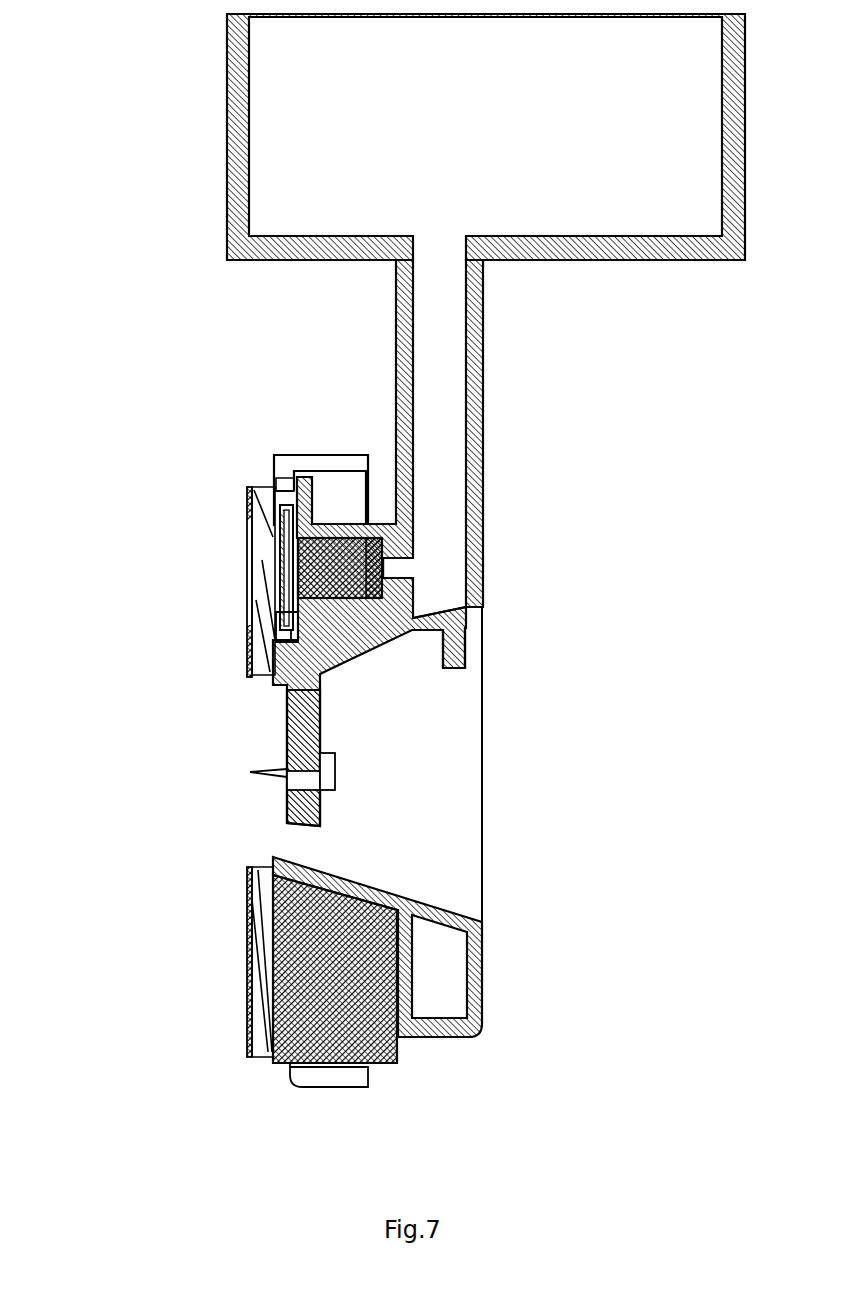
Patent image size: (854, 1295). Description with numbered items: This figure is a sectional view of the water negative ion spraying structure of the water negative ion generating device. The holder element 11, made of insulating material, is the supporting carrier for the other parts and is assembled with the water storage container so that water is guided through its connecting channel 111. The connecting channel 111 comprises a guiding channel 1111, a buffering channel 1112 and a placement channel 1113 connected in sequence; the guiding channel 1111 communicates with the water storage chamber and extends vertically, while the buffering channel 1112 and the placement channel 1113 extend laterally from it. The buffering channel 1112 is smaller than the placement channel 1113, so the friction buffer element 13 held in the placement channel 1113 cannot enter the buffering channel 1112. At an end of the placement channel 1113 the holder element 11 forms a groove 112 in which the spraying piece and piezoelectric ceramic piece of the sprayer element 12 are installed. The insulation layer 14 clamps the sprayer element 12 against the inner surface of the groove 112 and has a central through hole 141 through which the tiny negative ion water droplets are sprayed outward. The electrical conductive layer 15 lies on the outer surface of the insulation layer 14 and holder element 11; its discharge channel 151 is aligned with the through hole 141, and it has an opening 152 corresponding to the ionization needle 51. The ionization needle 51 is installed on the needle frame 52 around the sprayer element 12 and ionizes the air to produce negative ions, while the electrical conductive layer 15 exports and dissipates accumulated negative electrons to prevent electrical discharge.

The holder element 11 is at (323, 457).
The connecting channel 111 is at (440, 336).
The guiding channel 1111 is at (447, 431).
The buffering channel 1112 is at (395, 573).
The placement channel 1113 is at (412, 588).
The groove 112 is at (353, 657).
The sprayer element 12 is at (296, 535).
The friction buffer element 13 is at (327, 560).
The insulation layer 14 is at (266, 650).
The through hole 141 is at (265, 565).
The discharge channel 151 is at (266, 570).
The electrical conductive layer 15 is at (262, 648).
The opening 152 is at (255, 833).
The ionization needle 51 is at (277, 775).
The needle frame 52 is at (325, 730).